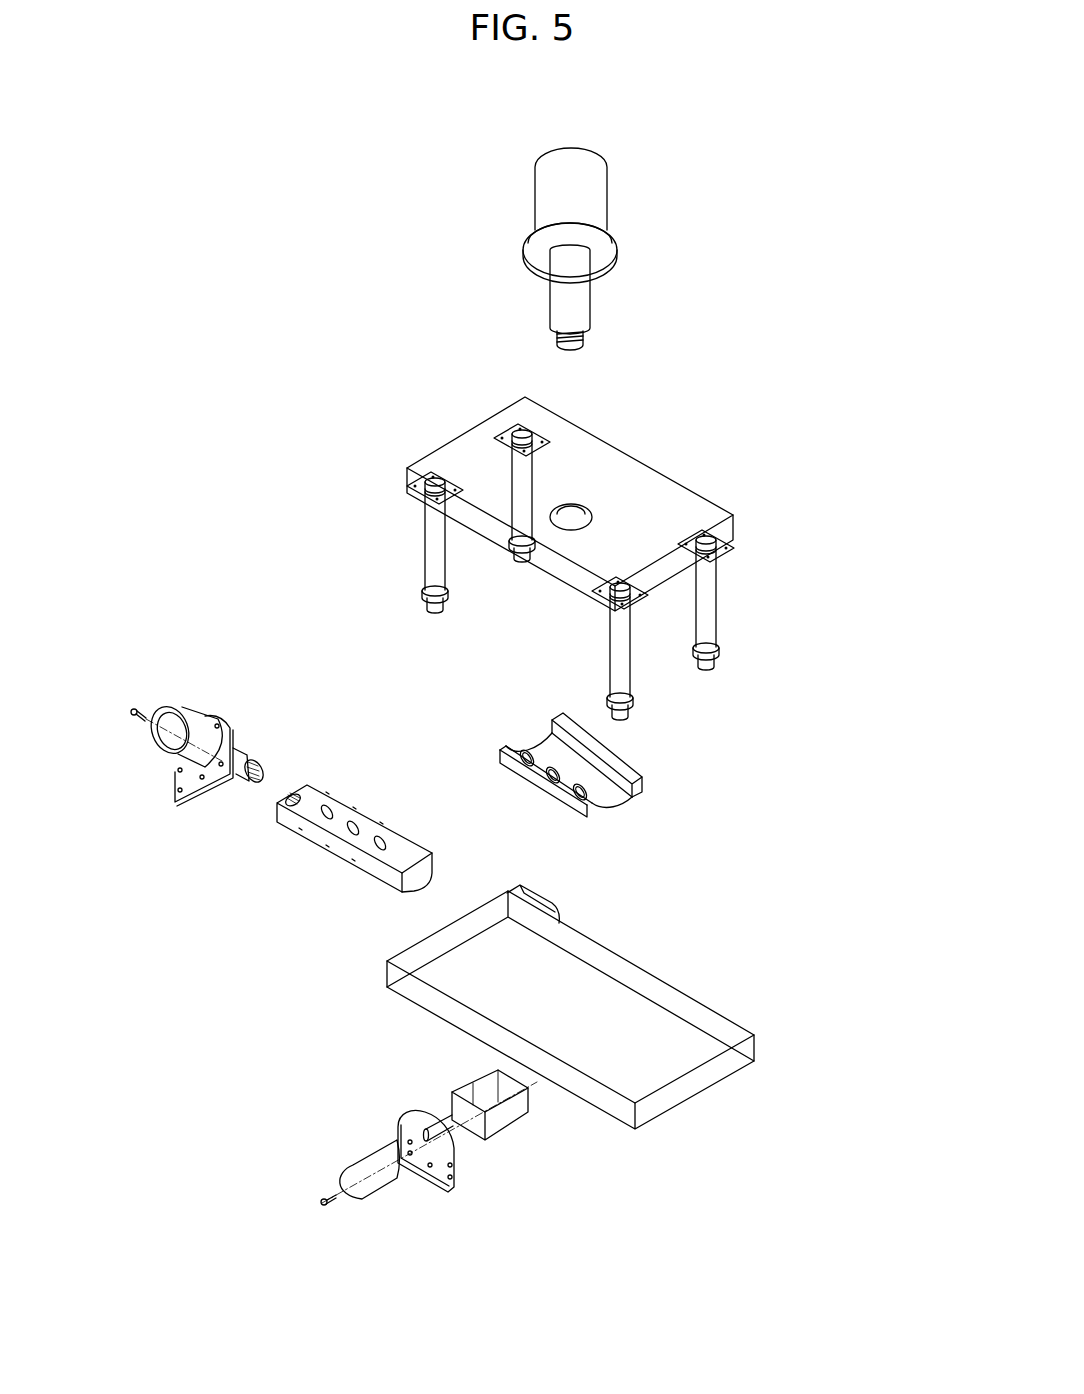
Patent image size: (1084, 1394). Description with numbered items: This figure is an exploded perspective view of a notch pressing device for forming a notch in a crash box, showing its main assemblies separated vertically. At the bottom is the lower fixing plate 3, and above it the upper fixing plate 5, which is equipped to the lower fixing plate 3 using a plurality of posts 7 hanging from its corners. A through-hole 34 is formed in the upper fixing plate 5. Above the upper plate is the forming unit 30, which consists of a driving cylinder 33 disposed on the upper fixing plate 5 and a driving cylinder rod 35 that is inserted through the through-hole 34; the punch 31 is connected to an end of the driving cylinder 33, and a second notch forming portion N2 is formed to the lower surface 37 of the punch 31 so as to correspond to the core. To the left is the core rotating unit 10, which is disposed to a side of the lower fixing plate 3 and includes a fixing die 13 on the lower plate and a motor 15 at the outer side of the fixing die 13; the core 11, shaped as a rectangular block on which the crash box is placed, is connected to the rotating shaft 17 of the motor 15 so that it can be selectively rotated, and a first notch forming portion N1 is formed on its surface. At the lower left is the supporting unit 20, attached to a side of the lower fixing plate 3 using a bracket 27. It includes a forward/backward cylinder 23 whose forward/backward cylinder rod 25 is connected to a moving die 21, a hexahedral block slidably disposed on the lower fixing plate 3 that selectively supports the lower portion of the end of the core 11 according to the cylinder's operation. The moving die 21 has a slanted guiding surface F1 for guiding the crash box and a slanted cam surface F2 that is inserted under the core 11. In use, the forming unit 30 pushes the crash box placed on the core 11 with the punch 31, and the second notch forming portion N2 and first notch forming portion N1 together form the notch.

The lower fixing plate 3 is at (597, 993).
The upper fixing plate 5 is at (570, 495).
The posts 7 is at (515, 512).
The core rotating unit 10 is at (288, 792).
The core 11 is at (357, 861).
The fixing die 13 is at (543, 904).
The motor 15 is at (200, 721).
The rotating shaft 17 is at (238, 748).
The supporting unit 20 is at (462, 1138).
The moving die 21 is at (463, 1085).
The forward/backward cylinder 23 is at (353, 1167).
The forward/backward cylinder rod 25 is at (457, 1135).
The bracket 27 is at (432, 1178).
The forming unit 30 is at (666, 249).
The punch 31 is at (584, 759).
The driving cylinder 33 is at (598, 191).
The through-hole 34 is at (573, 512).
The driving cylinder rod 35 is at (582, 294).
The lower surface 37 is at (517, 729).
The first notch forming portion N1 is at (367, 867).
The second notch forming portion N2 is at (583, 798).
The guiding surface F1 is at (529, 1136).
The cam surface F2 is at (480, 1060).